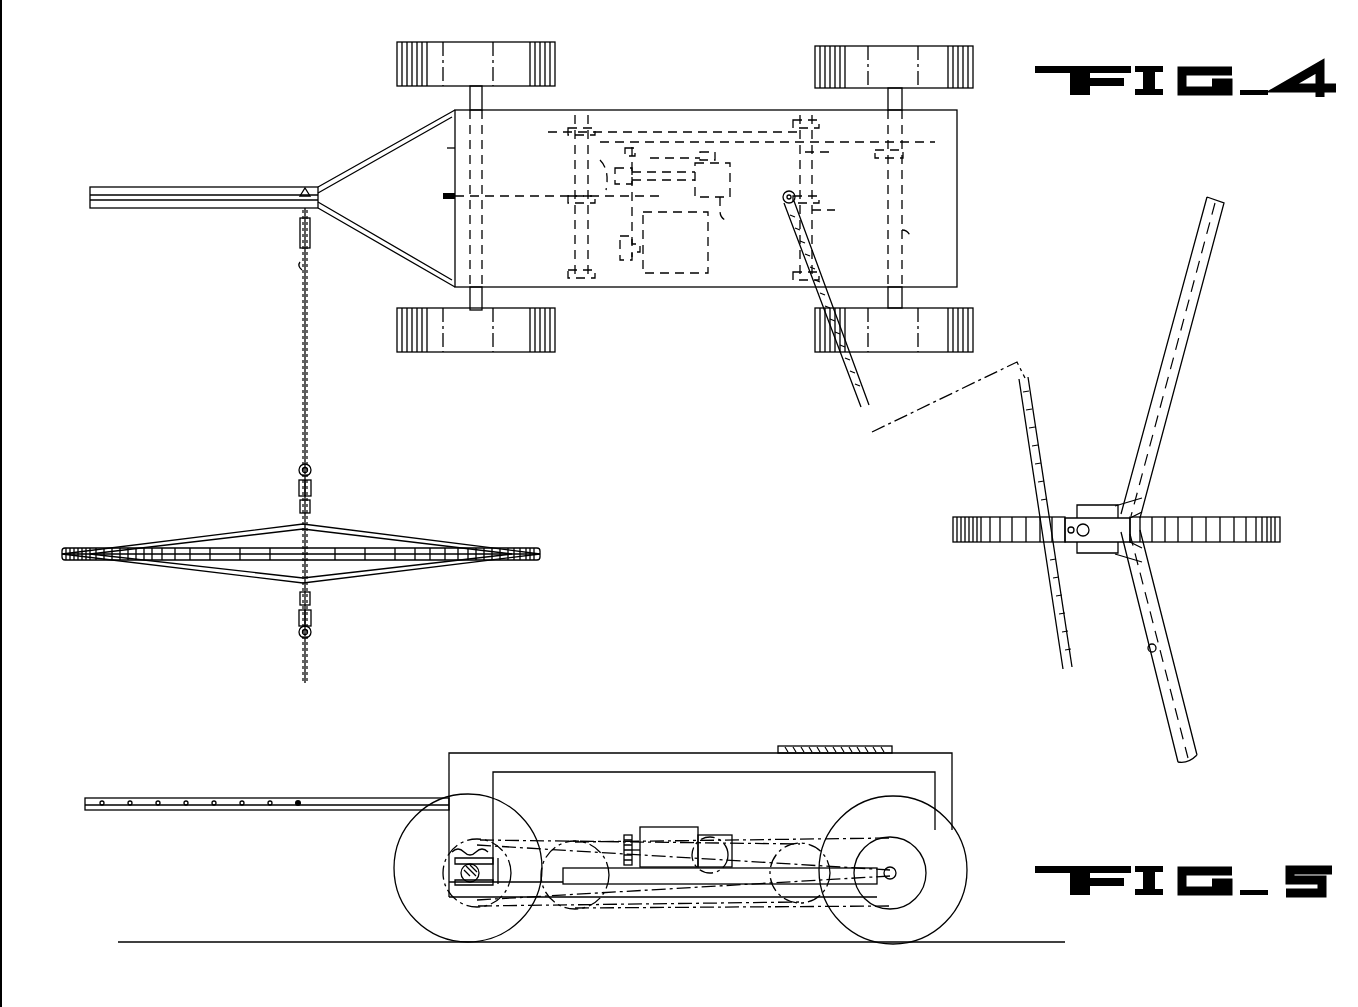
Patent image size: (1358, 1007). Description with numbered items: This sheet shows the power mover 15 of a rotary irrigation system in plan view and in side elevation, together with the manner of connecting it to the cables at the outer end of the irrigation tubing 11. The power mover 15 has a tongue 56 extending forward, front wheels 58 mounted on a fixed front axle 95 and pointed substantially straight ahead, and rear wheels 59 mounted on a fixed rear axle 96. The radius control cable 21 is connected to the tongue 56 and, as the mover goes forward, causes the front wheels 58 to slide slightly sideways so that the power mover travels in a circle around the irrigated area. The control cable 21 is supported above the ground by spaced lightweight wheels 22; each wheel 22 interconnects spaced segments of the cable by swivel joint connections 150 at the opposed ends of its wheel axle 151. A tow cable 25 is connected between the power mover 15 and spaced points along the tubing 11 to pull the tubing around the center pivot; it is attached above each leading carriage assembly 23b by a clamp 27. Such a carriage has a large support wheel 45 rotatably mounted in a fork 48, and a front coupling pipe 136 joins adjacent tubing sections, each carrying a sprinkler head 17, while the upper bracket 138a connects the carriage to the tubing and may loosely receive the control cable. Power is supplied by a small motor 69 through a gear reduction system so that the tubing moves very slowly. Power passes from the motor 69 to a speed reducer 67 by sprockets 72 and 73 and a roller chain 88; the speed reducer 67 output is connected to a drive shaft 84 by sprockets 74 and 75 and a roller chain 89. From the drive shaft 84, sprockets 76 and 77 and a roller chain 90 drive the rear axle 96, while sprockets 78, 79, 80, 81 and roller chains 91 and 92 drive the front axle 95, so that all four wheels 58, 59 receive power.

In FIG. 4, the irrigation tubing 11 is at (1195, 704).
In FIG. 4, the power mover 15 is at (392, 120).
In FIG. 5, the power mover 15 is at (545, 750).
In FIG. 4, the sprinkler head 17 is at (1160, 650).
In FIG. 4, the radius control cable 21 is at (310, 446).
In FIG. 5, the radius control cable 21 is at (297, 798).
In FIG. 4, the lightweight wheel 22 is at (542, 550).
In FIG. 4, the leading carriage assembly 23b is at (1012, 559).
In FIG. 4, the tow cable 25 is at (822, 298).
In FIG. 5, the tow cable 25 is at (835, 734).
In FIG. 4, the clamp 27 is at (1058, 519).
In FIG. 4, the support wheel 45 is at (952, 527).
In FIG. 4, the fork 48 is at (1098, 555).
In FIG. 4, the tongue 56 is at (228, 187).
In FIG. 5, the tongue 56 is at (184, 798).
In FIG. 4, the front wheel 58 is at (397, 63).
In FIG. 5, the front wheel 58 is at (400, 838).
In FIG. 4, the rear wheel 59 is at (973, 56).
In FIG. 5, the rear wheel 59 is at (965, 836).
In FIG. 4, the speed reducer 67 is at (738, 217).
In FIG. 5, the speed reducer 67 is at (718, 834).
In FIG. 4, the motor 69 is at (708, 272).
In FIG. 5, the motor 69 is at (680, 826).
In FIG. 4, the sprocket 72 is at (618, 254).
In FIG. 4, the sprocket 73 is at (636, 152).
In FIG. 4, the sprocket 74 is at (718, 155).
In FIG. 5, the sprocket 74 is at (733, 844).
In FIG. 4, the sprocket 75 is at (826, 160).
In FIG. 5, the sprocket 75 is at (771, 904).
In FIG. 4, the sprocket 76 is at (812, 150).
In FIG. 5, the sprocket 76 is at (785, 858).
In FIG. 4, the sprocket 77 is at (923, 162).
In FIG. 5, the sprocket 77 is at (854, 898).
In FIG. 4, the sprocket 78 is at (815, 135).
In FIG. 5, the sprocket 78 is at (812, 904).
In FIG. 4, the sprocket 79 is at (545, 129).
In FIG. 5, the sprocket 79 is at (618, 908).
In FIG. 4, the sprocket 80 is at (599, 167).
In FIG. 5, the sprocket 80 is at (549, 842).
In FIG. 4, the sprocket 81 is at (446, 200).
In FIG. 5, the sprocket 81 is at (490, 912).
In FIG. 4, the drive shaft 84 is at (838, 211).
In FIG. 4, the roller chain 88 is at (636, 190).
In FIG. 5, the roller chain 88 is at (626, 844).
In FIG. 4, the roller chain 89 is at (732, 170).
In FIG. 5, the roller chain 89 is at (740, 898).
In FIG. 4, the roller chain 90 is at (874, 142).
In FIG. 5, the roller chain 90 is at (848, 848).
In FIG. 4, the roller chain 91 is at (619, 130).
In FIG. 5, the roller chain 91 is at (656, 846).
In FIG. 4, the roller chain 92 is at (529, 204).
In FIG. 5, the roller chain 92 is at (545, 912).
In FIG. 4, the front axle 95 is at (455, 146).
In FIG. 5, the front axle 95 is at (460, 872).
In FIG. 4, the rear axle 96 is at (906, 233).
In FIG. 5, the rear axle 96 is at (896, 873).
In FIG. 4, the front coupling pipe 136 is at (1145, 514).
In FIG. 4, the upper bracket 138a is at (1100, 516).
In FIG. 4, the swivel joint connection 150 is at (298, 503).
In FIG. 4, the wheel axle 151 is at (310, 540).